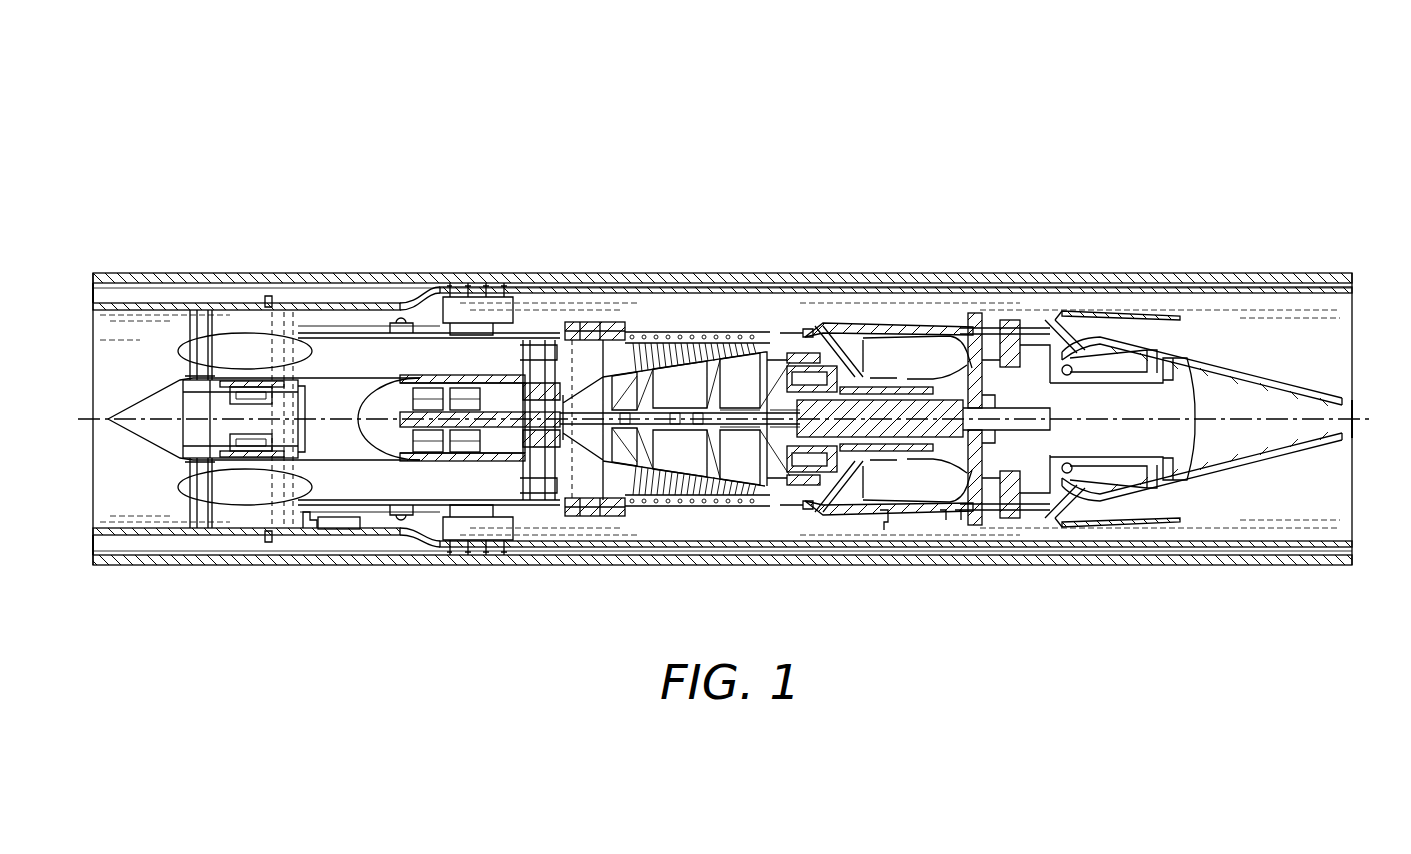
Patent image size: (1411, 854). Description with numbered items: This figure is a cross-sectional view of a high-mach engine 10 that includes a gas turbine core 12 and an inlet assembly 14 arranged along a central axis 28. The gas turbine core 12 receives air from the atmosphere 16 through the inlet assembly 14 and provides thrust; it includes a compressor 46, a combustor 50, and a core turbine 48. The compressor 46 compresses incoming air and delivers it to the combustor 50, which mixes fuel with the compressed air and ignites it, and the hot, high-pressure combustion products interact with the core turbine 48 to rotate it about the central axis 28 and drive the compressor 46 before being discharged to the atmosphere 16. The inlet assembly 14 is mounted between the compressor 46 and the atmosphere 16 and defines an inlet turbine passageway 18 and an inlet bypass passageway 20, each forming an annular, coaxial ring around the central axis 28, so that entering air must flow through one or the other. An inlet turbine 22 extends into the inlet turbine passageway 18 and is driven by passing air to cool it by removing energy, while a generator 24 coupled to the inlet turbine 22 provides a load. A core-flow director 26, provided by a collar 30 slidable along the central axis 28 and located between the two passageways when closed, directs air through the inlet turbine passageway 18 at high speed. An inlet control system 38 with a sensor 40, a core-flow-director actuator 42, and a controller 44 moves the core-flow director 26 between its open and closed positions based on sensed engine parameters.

The high-mach engine 10 is at (206, 181).
The gas turbine core 12 is at (697, 270).
The inlet assembly 14 is at (333, 254).
The atmosphere 16 is at (86, 384).
The inlet turbine passageway 18 is at (255, 508).
The inlet bypass passageway 20 is at (250, 467).
The inlet turbine 22 is at (214, 392).
The generator 24 is at (253, 386).
The core-flow director 26 is at (330, 328).
The central axis 28 is at (1360, 418).
The collar 30 is at (370, 332).
The inlet control system 38 is at (385, 610).
The sensor 40 is at (309, 512).
The core-flow-director actuator 42 is at (447, 512).
The controller 44 is at (343, 522).
The compressor 46 is at (657, 314).
The core turbine 48 is at (1018, 324).
The combustor 50 is at (900, 321).